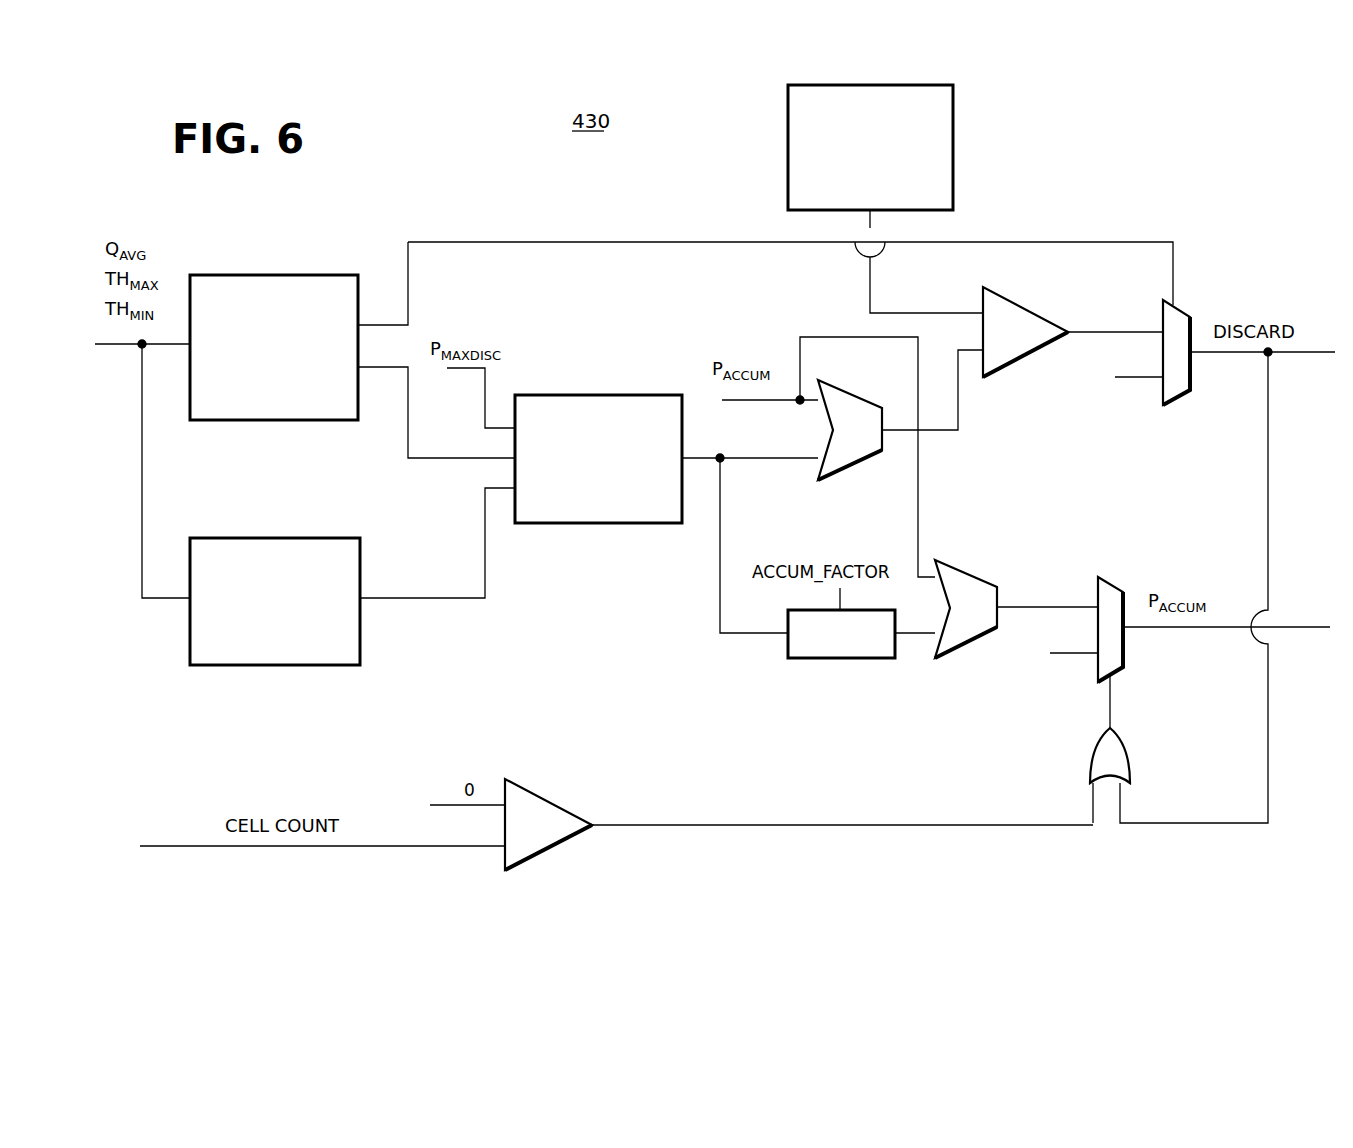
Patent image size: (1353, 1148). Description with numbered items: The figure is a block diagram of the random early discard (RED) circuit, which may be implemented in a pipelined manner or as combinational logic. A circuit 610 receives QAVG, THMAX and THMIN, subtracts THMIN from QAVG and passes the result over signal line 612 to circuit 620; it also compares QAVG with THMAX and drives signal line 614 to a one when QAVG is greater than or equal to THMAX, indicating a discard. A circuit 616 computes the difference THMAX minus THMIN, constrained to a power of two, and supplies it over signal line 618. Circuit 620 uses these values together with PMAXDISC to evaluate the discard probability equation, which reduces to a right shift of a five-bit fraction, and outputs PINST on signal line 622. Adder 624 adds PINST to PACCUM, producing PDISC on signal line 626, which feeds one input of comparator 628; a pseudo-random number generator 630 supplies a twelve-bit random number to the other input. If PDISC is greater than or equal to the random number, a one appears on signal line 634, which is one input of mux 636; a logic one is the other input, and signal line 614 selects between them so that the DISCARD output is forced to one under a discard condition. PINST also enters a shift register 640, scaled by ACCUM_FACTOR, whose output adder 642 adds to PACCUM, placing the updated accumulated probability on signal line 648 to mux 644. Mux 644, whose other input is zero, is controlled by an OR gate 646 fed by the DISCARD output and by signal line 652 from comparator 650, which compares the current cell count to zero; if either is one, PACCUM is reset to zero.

The circuit 610 is at (283, 275).
The signal line 612 is at (408, 415).
The signal line 614 is at (510, 242).
The circuit 616 is at (288, 665).
The signal line 618 is at (455, 598).
The circuit 620 is at (660, 395).
The signal line 622 is at (760, 458).
The adder 624 is at (842, 475).
The signal line 626 is at (935, 430).
The comparator 628 is at (1022, 360).
The pseudo-random number generator 630 is at (788, 195).
The signal line 634 is at (1137, 332).
The mux 636 is at (1190, 320).
The shift register 640 is at (820, 658).
The adder 642 is at (955, 650).
The mux 644 is at (1110, 580).
The OR gate 646 is at (1130, 765).
The signal line 648 is at (1050, 607).
The comparator 650 is at (552, 800).
The signal line 652 is at (800, 825).